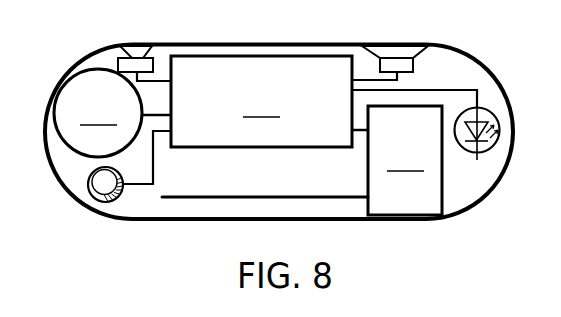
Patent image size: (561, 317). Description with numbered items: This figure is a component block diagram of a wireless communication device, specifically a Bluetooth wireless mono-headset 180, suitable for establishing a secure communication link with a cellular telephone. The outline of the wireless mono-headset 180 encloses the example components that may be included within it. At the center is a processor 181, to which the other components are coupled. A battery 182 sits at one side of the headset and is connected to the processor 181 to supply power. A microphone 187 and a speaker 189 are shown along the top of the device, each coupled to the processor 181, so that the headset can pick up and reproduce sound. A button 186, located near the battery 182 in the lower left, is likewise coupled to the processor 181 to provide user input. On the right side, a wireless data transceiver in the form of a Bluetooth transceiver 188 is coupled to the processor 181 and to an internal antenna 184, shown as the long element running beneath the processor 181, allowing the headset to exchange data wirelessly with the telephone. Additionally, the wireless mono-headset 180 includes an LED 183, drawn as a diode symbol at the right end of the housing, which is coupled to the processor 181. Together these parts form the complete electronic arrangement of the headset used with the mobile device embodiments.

The wireless mono-headset 180 is at (298, 30).
The processor 181 is at (255, 101).
The battery 182 is at (98, 113).
The LED 183 is at (477, 158).
The internal antenna 184 is at (322, 194).
The button 186 is at (83, 203).
The microphone 187 is at (137, 43).
The Bluetooth transceiver 188 is at (405, 160).
The speaker 189 is at (430, 44).